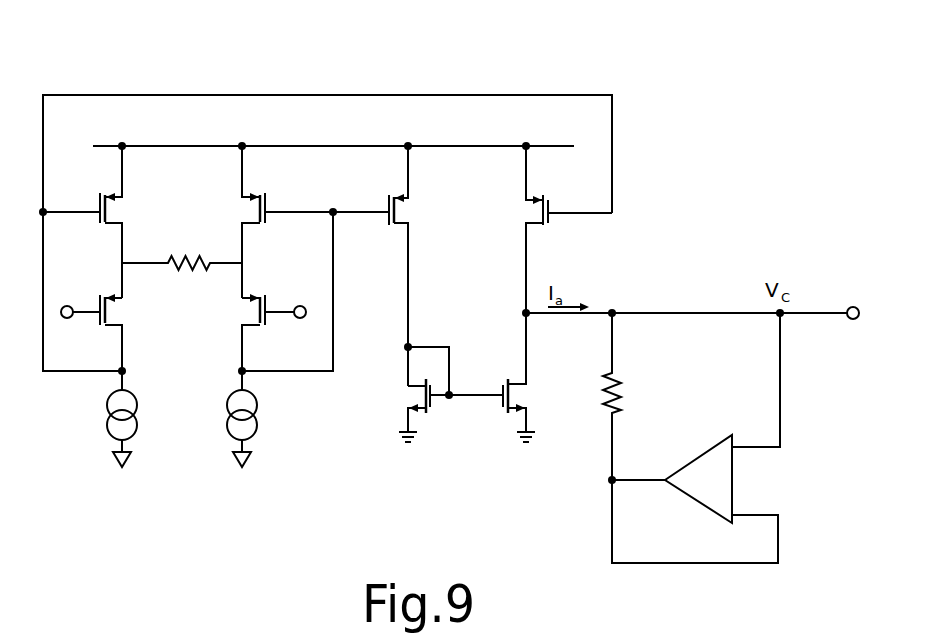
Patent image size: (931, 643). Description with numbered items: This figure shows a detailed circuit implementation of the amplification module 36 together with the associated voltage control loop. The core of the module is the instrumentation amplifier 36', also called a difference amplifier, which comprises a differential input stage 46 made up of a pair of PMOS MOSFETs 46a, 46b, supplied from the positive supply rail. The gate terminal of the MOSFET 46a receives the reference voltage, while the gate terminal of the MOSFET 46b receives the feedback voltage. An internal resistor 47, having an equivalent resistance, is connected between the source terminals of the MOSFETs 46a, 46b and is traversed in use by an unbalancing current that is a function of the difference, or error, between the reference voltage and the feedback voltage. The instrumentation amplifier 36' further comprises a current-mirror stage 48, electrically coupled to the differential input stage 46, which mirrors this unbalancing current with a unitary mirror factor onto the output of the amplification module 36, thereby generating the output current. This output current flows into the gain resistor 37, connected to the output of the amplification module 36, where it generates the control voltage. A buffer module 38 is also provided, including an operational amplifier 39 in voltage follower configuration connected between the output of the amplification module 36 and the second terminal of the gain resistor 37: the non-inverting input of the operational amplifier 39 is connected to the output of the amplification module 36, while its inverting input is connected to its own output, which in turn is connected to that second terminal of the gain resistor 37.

The amplification module 36 is at (325, 113).
The instrumentation amplifier 36' is at (450, 429).
The gain resistor 37 is at (623, 395).
The buffer module 38 is at (687, 578).
The operational amplifier 39 is at (698, 462).
The differential input stage 46 is at (181, 428).
The MOSFET 46a is at (115, 309).
The MOSFET 46b is at (248, 313).
The internal resistor 47 is at (175, 257).
The current-mirror stage 48 is at (594, 257).